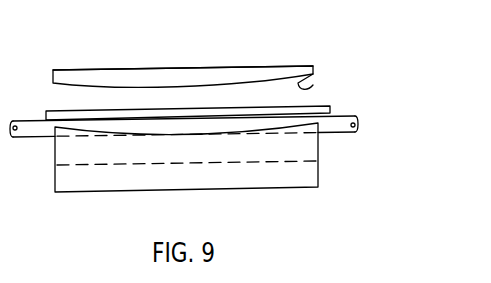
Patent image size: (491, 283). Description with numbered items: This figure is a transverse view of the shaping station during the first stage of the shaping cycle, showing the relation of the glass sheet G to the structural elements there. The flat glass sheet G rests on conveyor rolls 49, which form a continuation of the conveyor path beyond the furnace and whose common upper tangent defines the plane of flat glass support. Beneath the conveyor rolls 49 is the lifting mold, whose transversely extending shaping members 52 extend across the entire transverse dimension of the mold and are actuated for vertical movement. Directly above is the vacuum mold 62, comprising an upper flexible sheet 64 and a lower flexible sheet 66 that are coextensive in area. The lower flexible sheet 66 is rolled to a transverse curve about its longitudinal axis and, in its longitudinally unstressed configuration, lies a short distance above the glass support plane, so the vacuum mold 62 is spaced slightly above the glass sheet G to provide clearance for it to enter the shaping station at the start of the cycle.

The conveyor rolls 49 is at (42, 138).
The shaping members 52 is at (264, 133).
The vacuum mold 62 is at (202, 60).
The upper flexible sheet 64 is at (67, 70).
The lower flexible sheet 66 is at (313, 85).
The glass sheet G is at (47, 115).